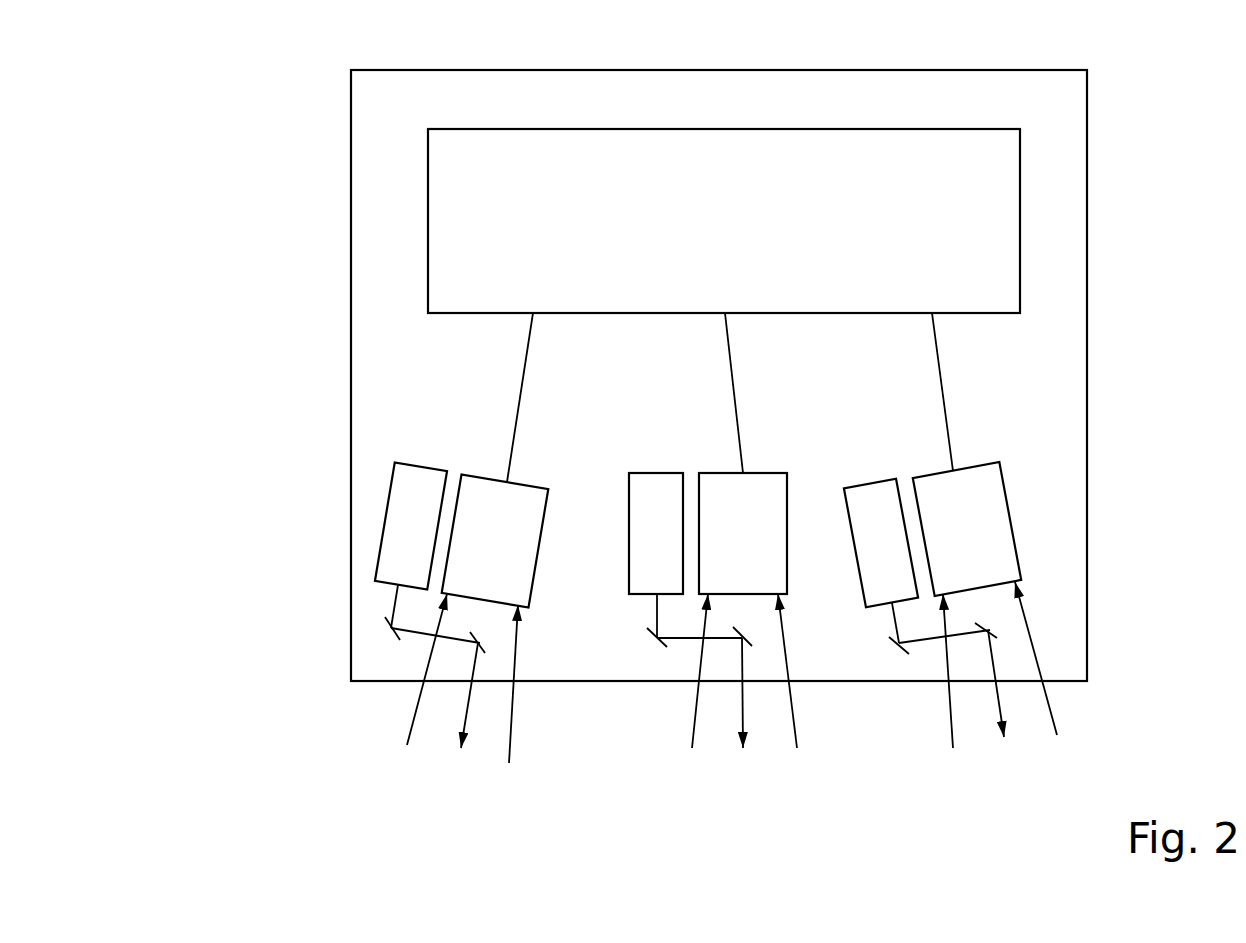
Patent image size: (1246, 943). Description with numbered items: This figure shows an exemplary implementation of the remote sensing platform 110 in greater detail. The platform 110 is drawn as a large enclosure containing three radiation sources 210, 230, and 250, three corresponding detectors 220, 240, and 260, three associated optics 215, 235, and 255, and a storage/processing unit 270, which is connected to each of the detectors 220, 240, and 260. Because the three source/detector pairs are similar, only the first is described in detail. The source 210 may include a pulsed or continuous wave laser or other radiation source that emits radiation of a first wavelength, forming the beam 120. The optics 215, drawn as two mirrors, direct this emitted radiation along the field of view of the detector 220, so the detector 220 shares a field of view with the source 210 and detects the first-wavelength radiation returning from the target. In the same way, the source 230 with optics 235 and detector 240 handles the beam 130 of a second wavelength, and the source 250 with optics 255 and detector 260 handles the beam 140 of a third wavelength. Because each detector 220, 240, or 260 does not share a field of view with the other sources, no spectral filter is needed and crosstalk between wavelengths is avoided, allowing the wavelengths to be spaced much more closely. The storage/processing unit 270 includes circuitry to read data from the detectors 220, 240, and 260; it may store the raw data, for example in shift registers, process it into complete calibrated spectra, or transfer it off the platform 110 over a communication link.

The remote sensing platform 110 is at (320, 138).
The beam of radiation 120 is at (410, 777).
The beam of radiation 130 is at (705, 775).
The beam of radiation 140 is at (973, 773).
The radiation source 210 is at (402, 482).
The optics 215 is at (390, 629).
The detector 220 is at (482, 500).
The radiation source 230 is at (643, 482).
The optics 235 is at (658, 639).
The detector 240 is at (720, 498).
The radiation source 250 is at (864, 487).
The optics 255 is at (898, 645).
The detector 260 is at (950, 499).
The storage/processing unit 270 is at (445, 218).